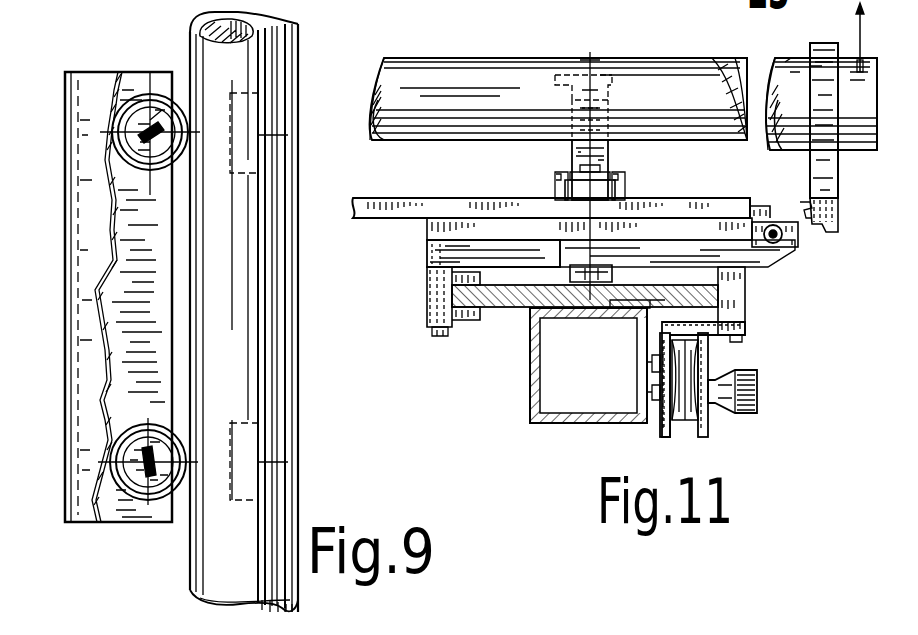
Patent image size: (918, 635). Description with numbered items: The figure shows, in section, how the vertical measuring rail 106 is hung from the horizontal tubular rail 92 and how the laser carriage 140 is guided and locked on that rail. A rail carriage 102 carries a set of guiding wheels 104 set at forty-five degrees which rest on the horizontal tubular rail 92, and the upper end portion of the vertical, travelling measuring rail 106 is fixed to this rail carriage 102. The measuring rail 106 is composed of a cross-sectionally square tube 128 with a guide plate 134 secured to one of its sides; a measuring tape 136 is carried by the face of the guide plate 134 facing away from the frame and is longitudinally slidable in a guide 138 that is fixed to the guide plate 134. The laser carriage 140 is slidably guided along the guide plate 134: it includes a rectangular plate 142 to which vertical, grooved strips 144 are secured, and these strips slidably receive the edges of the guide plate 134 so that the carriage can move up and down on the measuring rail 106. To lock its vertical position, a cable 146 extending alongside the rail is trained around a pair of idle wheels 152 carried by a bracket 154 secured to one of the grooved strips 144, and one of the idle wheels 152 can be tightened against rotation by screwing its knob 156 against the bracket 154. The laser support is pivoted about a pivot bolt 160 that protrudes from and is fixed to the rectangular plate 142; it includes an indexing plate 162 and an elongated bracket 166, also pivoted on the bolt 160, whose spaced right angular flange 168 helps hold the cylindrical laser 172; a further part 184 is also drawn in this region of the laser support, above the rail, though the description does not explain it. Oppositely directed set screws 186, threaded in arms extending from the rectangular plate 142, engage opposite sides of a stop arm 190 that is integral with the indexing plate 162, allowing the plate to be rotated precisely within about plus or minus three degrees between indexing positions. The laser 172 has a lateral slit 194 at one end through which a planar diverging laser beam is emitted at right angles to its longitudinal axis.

In FIG. 9, the horizontal tubular rail 92 is at (282, 358).
In FIG. 9, the rail carriage 102 is at (65, 118).
In FIG. 9, the guiding wheels 104 is at (148, 108).
In FIG. 11, the measuring rail 106 is at (558, 426).
In FIG. 11, the square tube 128 is at (530, 378).
In FIG. 11, the guide plate 134 is at (508, 302).
In FIG. 11, the measuring tape 136 is at (585, 276).
In FIG. 11, the guide 138 is at (612, 282).
In FIG. 11, the laser carriage 140 is at (428, 278).
In FIG. 11, the rectangular plate 142 is at (427, 260).
In FIG. 11, the grooved strips 144 is at (437, 306).
In FIG. 11, the cable 146 is at (712, 362).
In FIG. 11, the idle wheels 152 is at (688, 425).
In FIG. 11, the bracket 154 is at (660, 435).
In FIG. 11, the knob 156 is at (757, 410).
In FIG. 11, the pivot bolt 160 is at (605, 178).
In FIG. 11, the indexing plate 162 is at (466, 224).
In FIG. 11, the elongated bracket 166 is at (764, 212).
In FIG. 11, the right angular flange 168 is at (852, 148).
In FIG. 11, the cylindrical laser 172 is at (446, 80).
In FIG. 11, the bracket 184 is at (562, 72).
In FIG. 11, the set screws 186 is at (782, 250).
In FIG. 11, the stop arm 190 is at (790, 248).
In FIG. 11, the lateral slit 194 is at (850, 65).